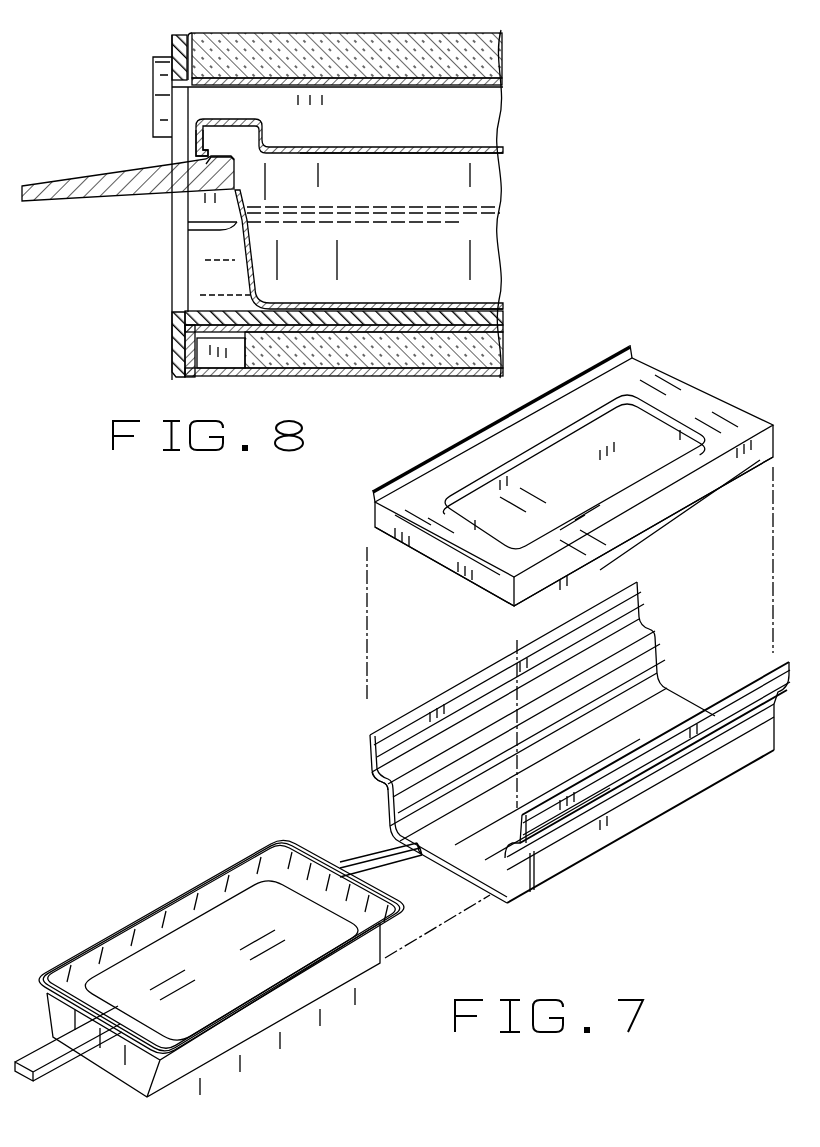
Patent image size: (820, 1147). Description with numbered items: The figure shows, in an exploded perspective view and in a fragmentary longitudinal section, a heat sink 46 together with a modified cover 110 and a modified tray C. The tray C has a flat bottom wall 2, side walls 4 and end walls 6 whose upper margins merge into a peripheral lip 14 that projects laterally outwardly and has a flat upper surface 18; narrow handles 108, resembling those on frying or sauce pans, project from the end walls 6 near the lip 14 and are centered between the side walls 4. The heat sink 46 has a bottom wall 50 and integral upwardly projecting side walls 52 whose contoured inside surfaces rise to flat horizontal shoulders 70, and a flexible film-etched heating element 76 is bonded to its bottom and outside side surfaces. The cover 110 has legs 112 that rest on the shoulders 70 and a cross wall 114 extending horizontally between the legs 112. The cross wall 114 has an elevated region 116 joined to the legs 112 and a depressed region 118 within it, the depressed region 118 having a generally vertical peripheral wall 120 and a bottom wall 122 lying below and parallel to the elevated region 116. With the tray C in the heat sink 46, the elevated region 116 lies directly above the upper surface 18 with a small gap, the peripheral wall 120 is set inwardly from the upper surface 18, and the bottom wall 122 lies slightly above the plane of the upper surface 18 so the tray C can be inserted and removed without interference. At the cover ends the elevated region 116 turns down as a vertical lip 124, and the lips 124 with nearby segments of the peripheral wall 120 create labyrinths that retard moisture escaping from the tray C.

In FIG. 8, the bottom wall 2 is at (459, 308).
In FIG. 8, the side walls 4 is at (473, 240).
In FIG. 7, the side walls 4 is at (148, 960).
In FIG. 8, the end walls 6 is at (210, 266).
In FIG. 7, the end walls 6 is at (290, 897).
In FIG. 7, the peripheral lip 14 is at (97, 940).
In FIG. 8, the upper surface 18 is at (228, 157).
In FIG. 7, the upper surface 18 is at (250, 997).
In FIG. 8, the heat sink 46 is at (188, 240).
In FIG. 7, the heat sink 46 is at (652, 771).
In FIG. 8, the bottom wall 50 is at (384, 312).
In FIG. 7, the bottom wall 50 is at (667, 707).
In FIG. 8, the side walls 52 is at (202, 289).
In FIG. 7, the side walls 52 is at (387, 794).
In FIG. 7, the horizontal shoulders 70 is at (640, 627).
In FIG. 7, the heating element 76 is at (613, 825).
In FIG. 8, the handles 108 is at (108, 168).
In FIG. 7, the handles 108 is at (33, 1081).
In FIG. 8, the cover 110 is at (460, 113).
In FIG. 7, the cover 110 is at (402, 478).
In FIG. 7, the legs 112 is at (561, 383).
In FIG. 7, the cross wall 114 is at (662, 370).
In FIG. 8, the elevated region 116 is at (187, 80).
In FIG. 7, the elevated region 116 is at (613, 383).
In FIG. 8, the depressed region 118 is at (468, 132).
In FIG. 7, the depressed region 118 is at (660, 445).
In FIG. 8, the peripheral wall 120 is at (367, 181).
In FIG. 7, the peripheral wall 120 is at (513, 467).
In FIG. 8, the bottom wall 122 is at (462, 160).
In FIG. 7, the bottom wall 122 is at (497, 510).
In FIG. 8, the vertical lip 124 is at (193, 135).
In FIG. 7, the vertical lip 124 is at (453, 571).
In FIG. 8, the modified tray C is at (460, 213).
In FIG. 7, the modified tray C is at (195, 880).